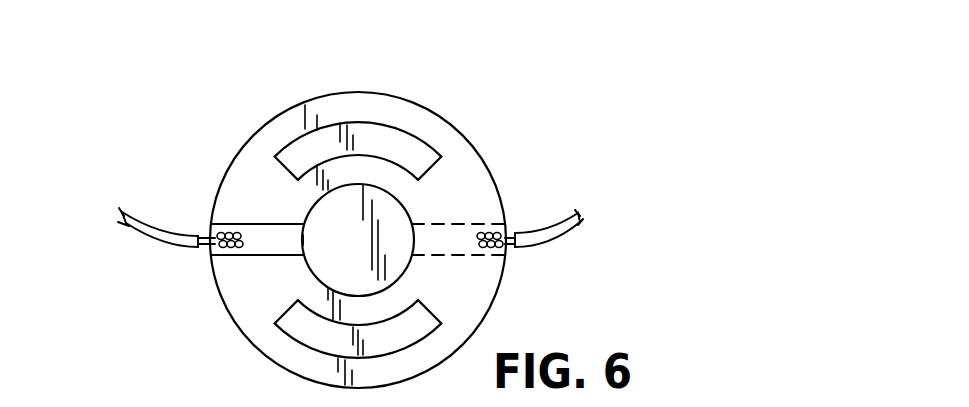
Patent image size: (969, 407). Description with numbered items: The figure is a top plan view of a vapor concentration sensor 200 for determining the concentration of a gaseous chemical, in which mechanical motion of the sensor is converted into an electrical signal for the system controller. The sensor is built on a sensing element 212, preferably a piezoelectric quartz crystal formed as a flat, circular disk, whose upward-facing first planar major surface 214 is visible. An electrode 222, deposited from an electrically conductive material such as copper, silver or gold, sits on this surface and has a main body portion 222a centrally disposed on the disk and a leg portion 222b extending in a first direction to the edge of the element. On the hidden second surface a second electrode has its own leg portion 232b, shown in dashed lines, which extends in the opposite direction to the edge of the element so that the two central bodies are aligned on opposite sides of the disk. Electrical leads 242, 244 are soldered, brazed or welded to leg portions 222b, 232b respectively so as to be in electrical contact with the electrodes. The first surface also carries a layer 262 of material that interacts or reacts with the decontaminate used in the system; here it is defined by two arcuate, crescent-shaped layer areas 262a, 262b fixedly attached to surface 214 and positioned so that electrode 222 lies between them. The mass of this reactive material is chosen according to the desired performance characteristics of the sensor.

The vapor concentration sensor 200 is at (545, 125).
The sensing element 212 is at (476, 134).
The first planar major surface 214 is at (481, 181).
The electrode 222 is at (306, 271).
The main body portion 222a is at (322, 217).
The leg portion 222b is at (268, 247).
The leg portion 232b is at (460, 255).
The electrical lead 242 is at (140, 232).
The electrical lead 244 is at (545, 236).
The layer 262 is at (391, 121).
The arcuate layer area 262a is at (361, 138).
The arcuate layer area 262b is at (300, 330).